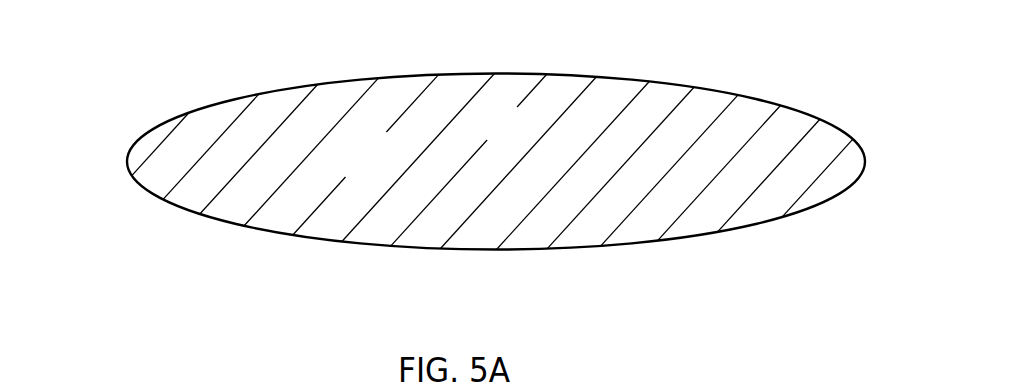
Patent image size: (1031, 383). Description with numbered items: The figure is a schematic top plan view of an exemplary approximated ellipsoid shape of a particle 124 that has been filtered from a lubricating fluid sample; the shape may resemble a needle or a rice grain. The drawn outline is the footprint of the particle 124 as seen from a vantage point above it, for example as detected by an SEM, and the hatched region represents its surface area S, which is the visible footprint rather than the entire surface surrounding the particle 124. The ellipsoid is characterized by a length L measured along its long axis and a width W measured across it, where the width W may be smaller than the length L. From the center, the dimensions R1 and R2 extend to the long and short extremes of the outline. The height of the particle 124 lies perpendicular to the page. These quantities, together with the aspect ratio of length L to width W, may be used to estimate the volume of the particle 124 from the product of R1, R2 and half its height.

The particle 124 is at (562, 162).
The surface area S is at (362, 170).
The length L is at (134, 33).
The width W is at (87, 83).
The dimension R1 is at (855, 161).
The dimension R2 is at (497, 84).